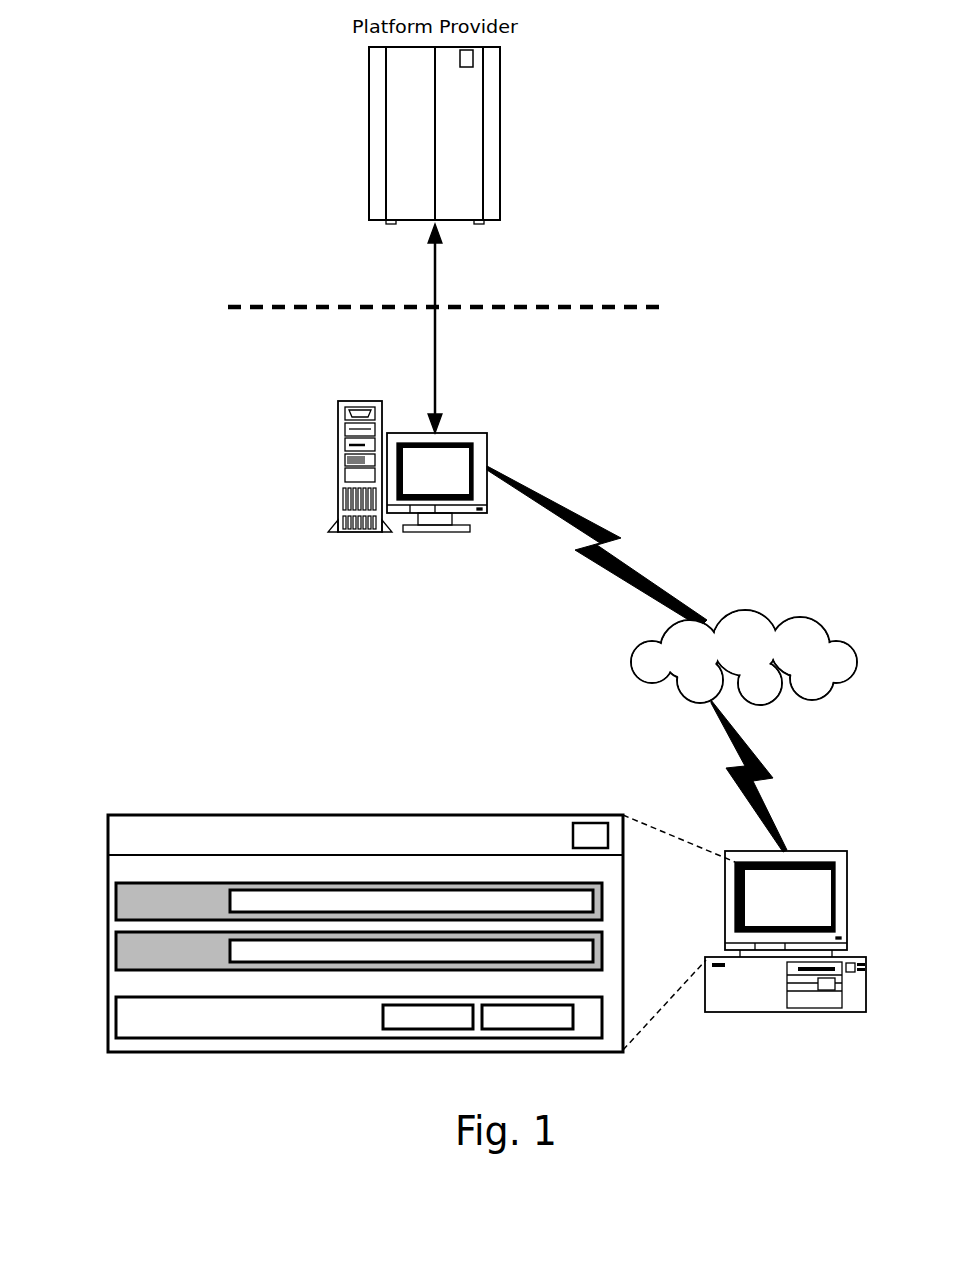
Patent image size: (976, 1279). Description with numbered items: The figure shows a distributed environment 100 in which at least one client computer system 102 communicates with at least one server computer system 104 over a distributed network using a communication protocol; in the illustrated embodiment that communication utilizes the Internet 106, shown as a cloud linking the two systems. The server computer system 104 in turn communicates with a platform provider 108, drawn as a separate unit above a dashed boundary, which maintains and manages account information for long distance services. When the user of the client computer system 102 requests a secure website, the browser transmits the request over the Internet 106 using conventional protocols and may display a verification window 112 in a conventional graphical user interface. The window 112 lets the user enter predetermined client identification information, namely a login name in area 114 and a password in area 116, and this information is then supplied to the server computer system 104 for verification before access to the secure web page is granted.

The distributed environment 100 is at (723, 79).
The client computer system 102 is at (829, 851).
The server computer system 104 is at (338, 465).
The Internet 106 is at (632, 664).
The platform provider 108 is at (500, 133).
The window 112 is at (332, 908).
The login name area 114 is at (122, 901).
The password area 116 is at (122, 950).